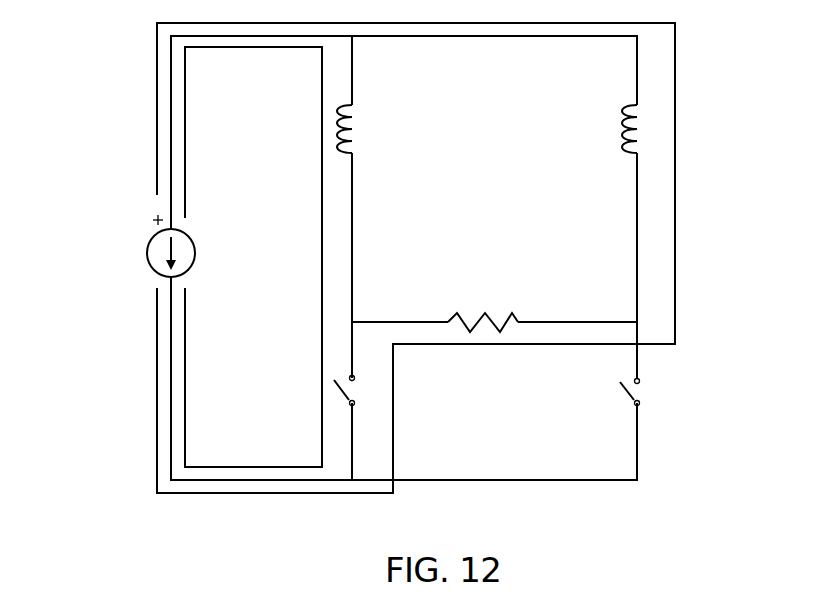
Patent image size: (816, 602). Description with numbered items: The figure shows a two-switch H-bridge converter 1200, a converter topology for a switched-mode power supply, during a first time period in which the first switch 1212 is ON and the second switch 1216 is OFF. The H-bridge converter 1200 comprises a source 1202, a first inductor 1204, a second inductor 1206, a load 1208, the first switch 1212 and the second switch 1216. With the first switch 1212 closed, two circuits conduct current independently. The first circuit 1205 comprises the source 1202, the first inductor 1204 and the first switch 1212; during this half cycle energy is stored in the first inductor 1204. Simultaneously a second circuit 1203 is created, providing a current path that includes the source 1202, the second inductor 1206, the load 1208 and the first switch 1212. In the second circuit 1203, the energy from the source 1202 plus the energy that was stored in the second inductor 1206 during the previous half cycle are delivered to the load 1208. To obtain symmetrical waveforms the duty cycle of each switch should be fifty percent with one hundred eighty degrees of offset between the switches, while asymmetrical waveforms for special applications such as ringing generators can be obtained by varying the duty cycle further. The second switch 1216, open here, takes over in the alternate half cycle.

The two-switch H-bridge converter 1200 is at (376, 297).
The source U1 1202 is at (148, 256).
The second circuit 1203 is at (377, 494).
The inductor L1 1204 is at (354, 118).
The first circuit 1205 is at (322, 88).
The inductor L2 1206 is at (637, 100).
The load R1 1208 is at (513, 311).
The switch S1 1212 is at (338, 392).
The switch S2 1216 is at (630, 398).